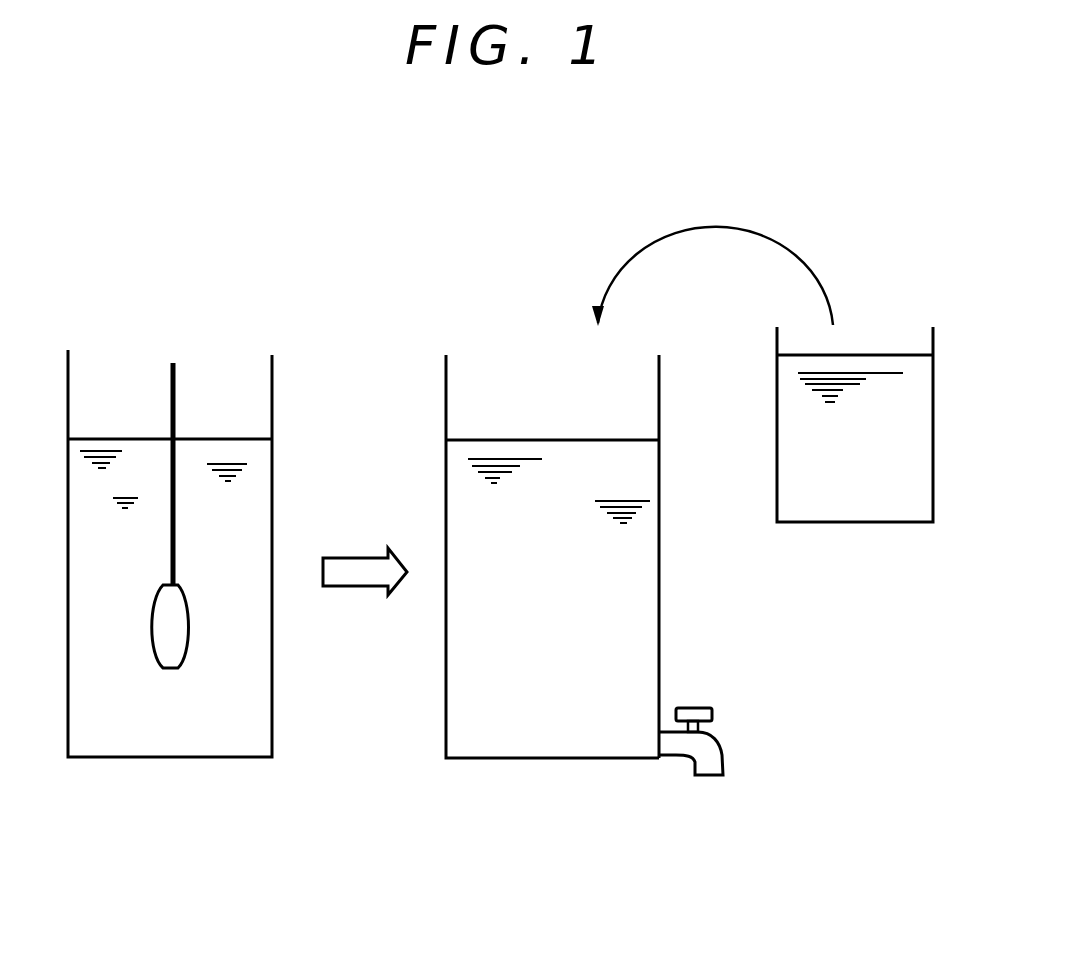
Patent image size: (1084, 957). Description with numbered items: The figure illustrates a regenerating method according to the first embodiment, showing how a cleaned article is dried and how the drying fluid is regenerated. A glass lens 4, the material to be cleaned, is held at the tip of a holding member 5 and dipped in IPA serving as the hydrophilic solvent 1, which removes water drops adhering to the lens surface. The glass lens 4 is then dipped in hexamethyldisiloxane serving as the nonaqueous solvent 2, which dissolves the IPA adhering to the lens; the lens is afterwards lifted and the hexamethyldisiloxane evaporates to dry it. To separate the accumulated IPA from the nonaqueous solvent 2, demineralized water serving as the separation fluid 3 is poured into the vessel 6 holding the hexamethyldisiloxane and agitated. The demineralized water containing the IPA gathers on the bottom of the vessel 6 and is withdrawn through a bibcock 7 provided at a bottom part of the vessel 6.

The hydrophilic solvent 1 is at (100, 725).
The nonaqueous solvent 2 is at (513, 730).
The separation fluid 3 is at (882, 490).
The glass lens 4 is at (175, 628).
The holding member 5 is at (176, 400).
The vessel 6 is at (660, 538).
The bibcock 7 is at (720, 742).